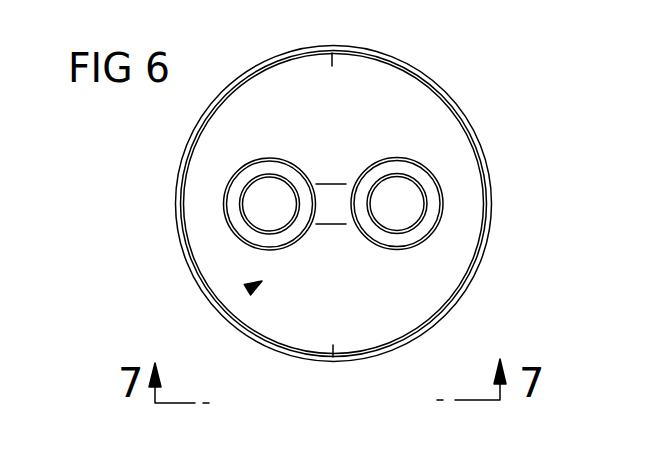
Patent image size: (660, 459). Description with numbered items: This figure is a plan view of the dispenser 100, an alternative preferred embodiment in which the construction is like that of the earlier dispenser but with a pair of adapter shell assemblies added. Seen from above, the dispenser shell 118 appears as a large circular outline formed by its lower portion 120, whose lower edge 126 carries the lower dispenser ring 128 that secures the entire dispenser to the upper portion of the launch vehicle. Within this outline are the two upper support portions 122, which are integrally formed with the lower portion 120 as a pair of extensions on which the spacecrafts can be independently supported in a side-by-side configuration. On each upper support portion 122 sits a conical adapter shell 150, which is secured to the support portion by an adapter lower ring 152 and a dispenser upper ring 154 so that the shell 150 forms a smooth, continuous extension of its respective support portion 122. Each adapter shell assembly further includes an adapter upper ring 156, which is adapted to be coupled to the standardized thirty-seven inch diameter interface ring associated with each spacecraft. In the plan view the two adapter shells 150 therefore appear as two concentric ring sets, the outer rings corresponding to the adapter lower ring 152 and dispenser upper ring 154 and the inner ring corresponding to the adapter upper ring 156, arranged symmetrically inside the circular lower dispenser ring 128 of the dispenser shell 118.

The dispenser 100 is at (339, 209).
The dispenser shell 118 is at (252, 287).
The lower portion 120 is at (437, 272).
The upper support portions 122 is at (296, 166).
The lower edge 126 is at (218, 271).
The lower dispenser ring 128 is at (355, 361).
The conical adapter shell 150 is at (339, 184).
The adapter lower ring 152 is at (225, 218).
The dispenser upper ring 154 is at (443, 218).
The adapter upper ring 156 is at (240, 202).